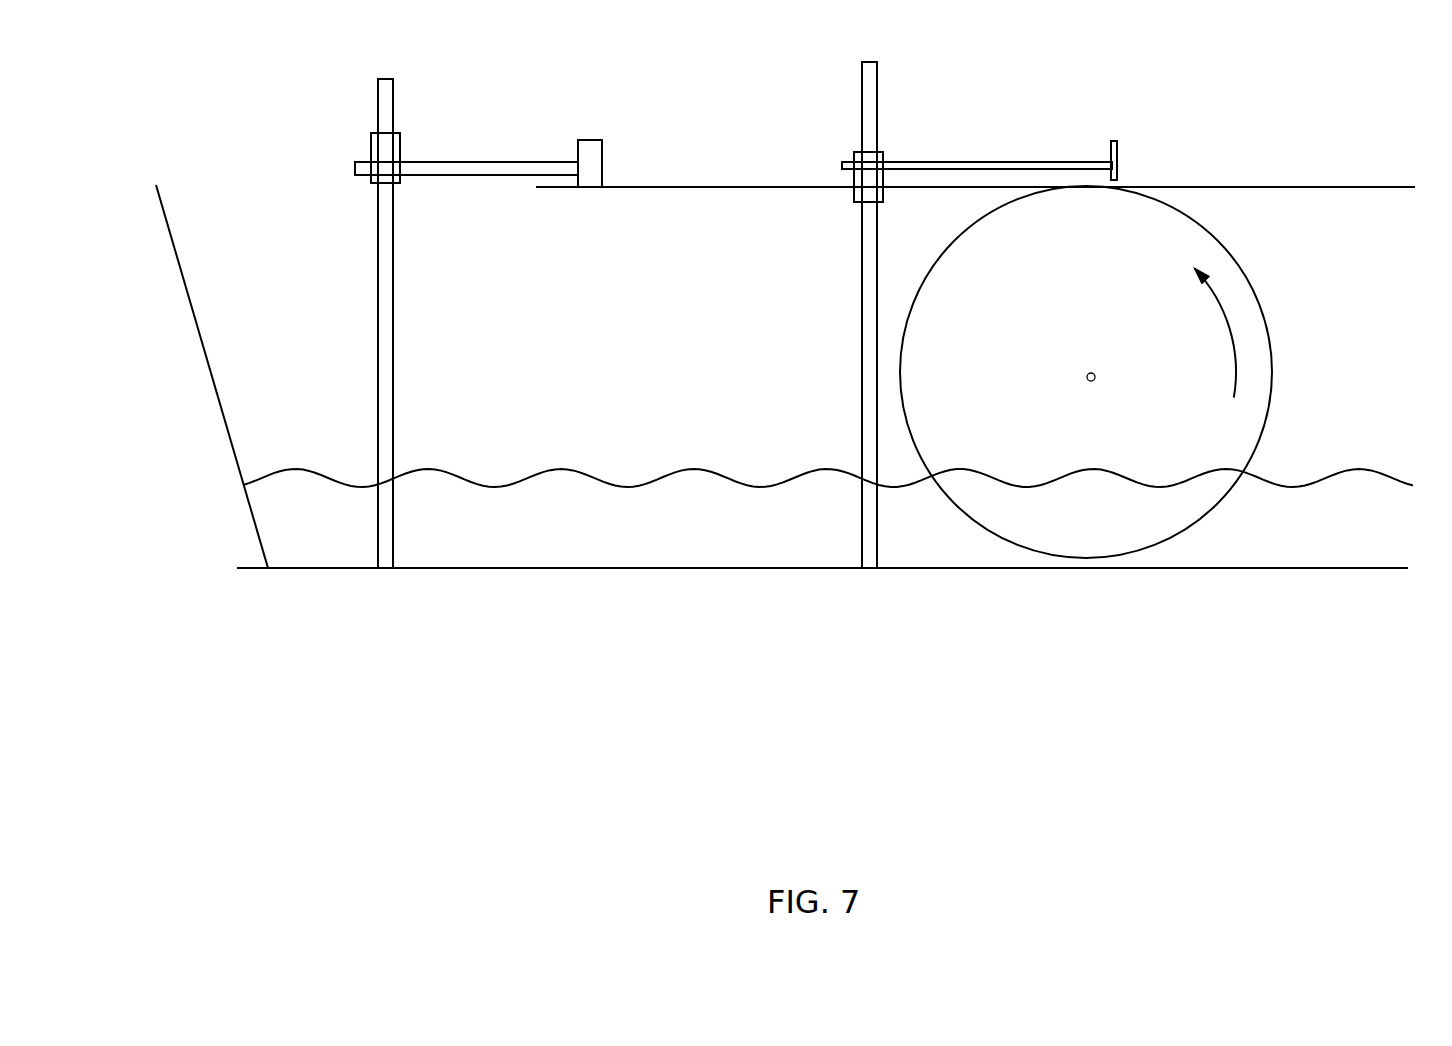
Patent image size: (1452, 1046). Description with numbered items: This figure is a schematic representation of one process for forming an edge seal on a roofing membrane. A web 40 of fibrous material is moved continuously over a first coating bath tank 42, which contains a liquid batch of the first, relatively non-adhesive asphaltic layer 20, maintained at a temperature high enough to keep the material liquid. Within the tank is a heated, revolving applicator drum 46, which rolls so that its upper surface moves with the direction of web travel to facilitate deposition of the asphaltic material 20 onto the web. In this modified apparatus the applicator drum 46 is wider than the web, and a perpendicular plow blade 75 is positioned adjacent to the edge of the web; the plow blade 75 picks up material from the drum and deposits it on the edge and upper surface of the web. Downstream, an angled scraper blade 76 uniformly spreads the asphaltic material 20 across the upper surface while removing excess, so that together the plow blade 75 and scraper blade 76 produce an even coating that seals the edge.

The first, relatively non-adhesive asphaltic layer 20 is at (1306, 547).
The web 40 is at (1352, 187).
The first coating bath tank 42 is at (229, 437).
The applicator drum 46 is at (1272, 350).
The plow blade 75 is at (1117, 146).
The scraper blade 76 is at (590, 140).